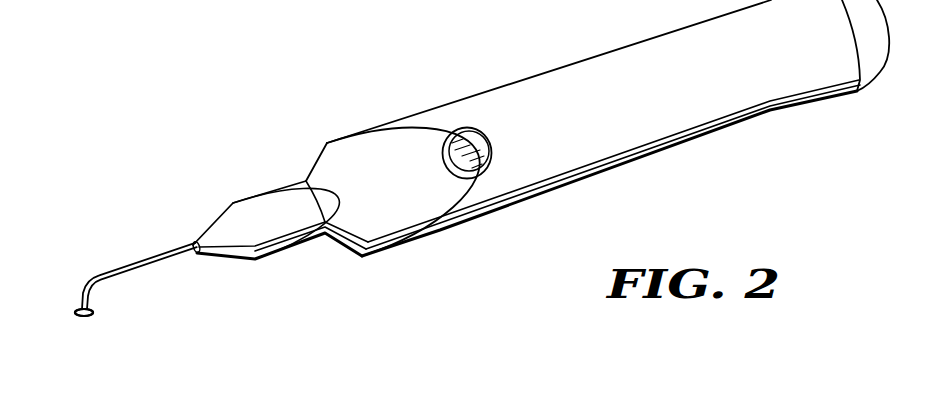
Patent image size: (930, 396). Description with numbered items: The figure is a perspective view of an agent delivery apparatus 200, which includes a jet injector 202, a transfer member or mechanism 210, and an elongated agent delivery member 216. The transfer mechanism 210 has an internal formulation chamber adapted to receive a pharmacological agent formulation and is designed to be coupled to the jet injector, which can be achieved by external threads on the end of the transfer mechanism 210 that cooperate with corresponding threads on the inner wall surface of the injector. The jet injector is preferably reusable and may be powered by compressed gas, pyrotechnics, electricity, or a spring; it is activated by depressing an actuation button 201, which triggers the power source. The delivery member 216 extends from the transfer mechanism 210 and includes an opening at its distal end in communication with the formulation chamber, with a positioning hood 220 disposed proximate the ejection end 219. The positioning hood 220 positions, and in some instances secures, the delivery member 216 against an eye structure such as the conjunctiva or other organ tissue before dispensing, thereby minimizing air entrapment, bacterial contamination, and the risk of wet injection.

The agent delivery apparatus 200 is at (730, 134).
The actuation button 201 is at (459, 129).
The jet injector 202 is at (423, 200).
The transfer member or mechanism 210 is at (262, 195).
The elongated agent delivery member 216 is at (123, 265).
The ejection end 219 is at (80, 308).
The positioning hood 220 is at (93, 313).